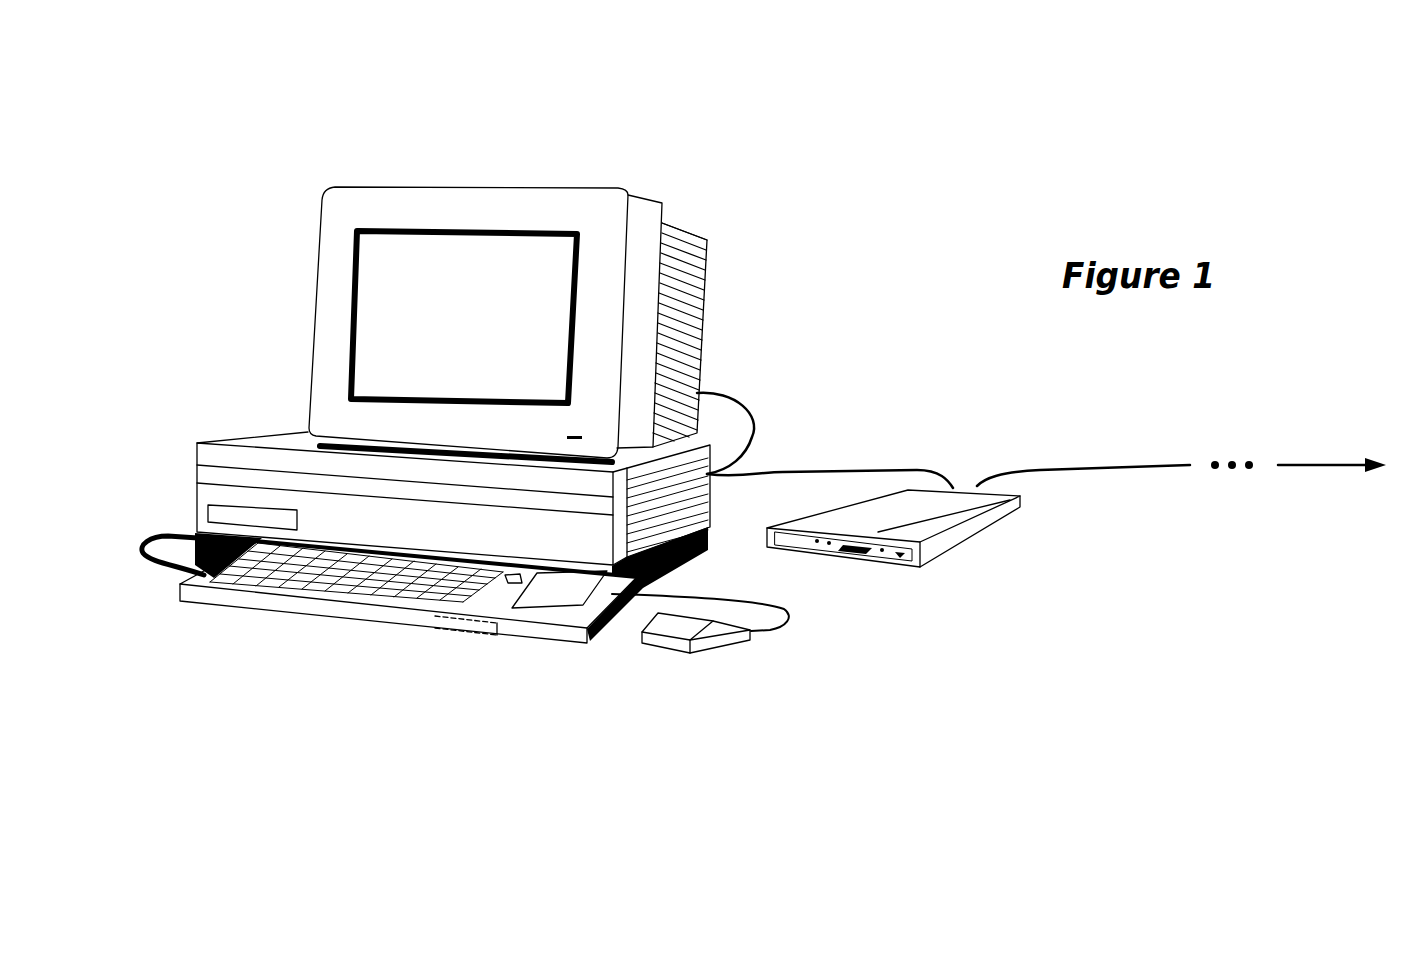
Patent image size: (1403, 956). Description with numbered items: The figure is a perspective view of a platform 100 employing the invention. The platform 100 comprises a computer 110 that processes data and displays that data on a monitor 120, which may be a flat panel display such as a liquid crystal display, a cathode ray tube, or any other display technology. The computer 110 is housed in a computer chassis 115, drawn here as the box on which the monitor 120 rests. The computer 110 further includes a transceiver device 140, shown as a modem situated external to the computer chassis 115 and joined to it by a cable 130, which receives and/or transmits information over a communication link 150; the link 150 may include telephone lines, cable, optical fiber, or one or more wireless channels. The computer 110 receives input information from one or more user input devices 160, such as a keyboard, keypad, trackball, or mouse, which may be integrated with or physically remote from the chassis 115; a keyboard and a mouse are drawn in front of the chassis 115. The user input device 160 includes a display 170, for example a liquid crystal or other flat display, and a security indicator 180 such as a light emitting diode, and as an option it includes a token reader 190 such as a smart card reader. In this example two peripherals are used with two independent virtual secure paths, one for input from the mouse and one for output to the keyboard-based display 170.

The platform 100 is at (228, 195).
The computer 110 is at (166, 511).
The computer chassis 115 is at (282, 438).
The monitor 120 is at (452, 183).
The cable 130 is at (730, 397).
The transceiver device 140 is at (957, 503).
The communication link 150 is at (1200, 510).
The user input device 160 is at (613, 668).
The display 170 is at (576, 606).
The security indicator 180 is at (511, 584).
The token reader 190 is at (433, 618).